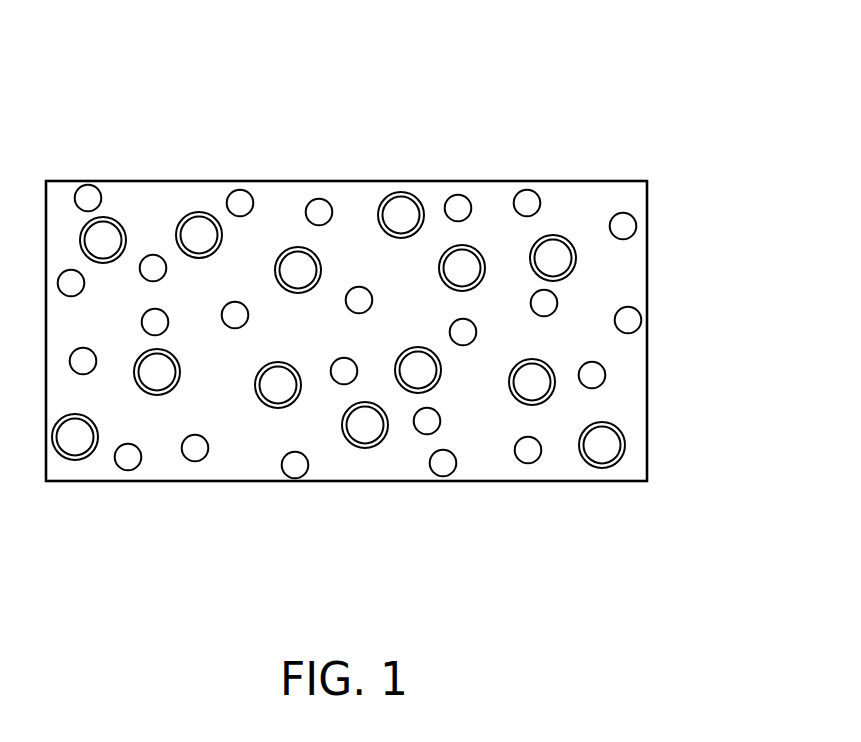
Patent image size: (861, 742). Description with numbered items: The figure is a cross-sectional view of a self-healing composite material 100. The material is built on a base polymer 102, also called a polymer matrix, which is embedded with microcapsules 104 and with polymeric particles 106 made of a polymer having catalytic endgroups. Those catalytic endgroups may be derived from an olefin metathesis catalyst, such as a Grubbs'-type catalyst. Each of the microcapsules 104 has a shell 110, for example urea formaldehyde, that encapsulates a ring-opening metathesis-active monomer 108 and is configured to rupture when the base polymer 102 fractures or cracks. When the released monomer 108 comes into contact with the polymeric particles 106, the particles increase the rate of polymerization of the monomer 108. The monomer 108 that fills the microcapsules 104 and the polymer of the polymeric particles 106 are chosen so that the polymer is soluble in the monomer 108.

The self-healing composite material 100 is at (83, 108).
The base polymer 102 is at (123, 202).
The microcapsule 104 is at (402, 215).
The polymeric particle 106 is at (128, 457).
The ring-opening metathesis-active monomer 108 is at (598, 438).
The shell 110 is at (622, 457).